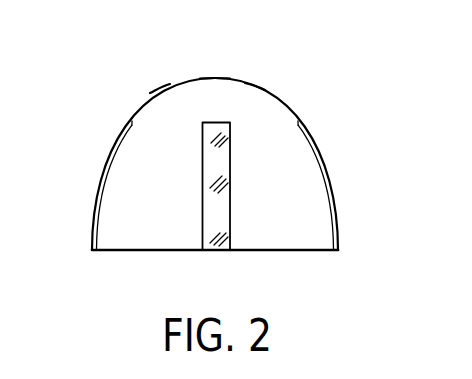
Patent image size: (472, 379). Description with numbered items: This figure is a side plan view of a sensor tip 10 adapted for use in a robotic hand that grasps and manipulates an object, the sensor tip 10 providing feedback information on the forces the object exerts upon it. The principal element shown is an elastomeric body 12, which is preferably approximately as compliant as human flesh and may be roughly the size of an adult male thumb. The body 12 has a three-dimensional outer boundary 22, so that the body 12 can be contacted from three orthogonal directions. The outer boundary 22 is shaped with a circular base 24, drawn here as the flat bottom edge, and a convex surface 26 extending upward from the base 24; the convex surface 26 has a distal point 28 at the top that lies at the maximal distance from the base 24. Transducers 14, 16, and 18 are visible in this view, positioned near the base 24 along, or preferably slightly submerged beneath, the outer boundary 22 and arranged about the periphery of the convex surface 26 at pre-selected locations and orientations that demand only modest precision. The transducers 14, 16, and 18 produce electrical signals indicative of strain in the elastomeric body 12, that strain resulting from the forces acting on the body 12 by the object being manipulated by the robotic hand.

The sensor tip 10 is at (214, 147).
The elastomeric body 12 is at (135, 116).
The transducer 14 is at (104, 172).
The transducer 16 is at (230, 204).
The transducer 18 is at (330, 188).
The outer boundary 22 is at (160, 96).
The circular base 24 is at (138, 251).
The convex surface 26 is at (255, 86).
The distal point 28 is at (220, 79).